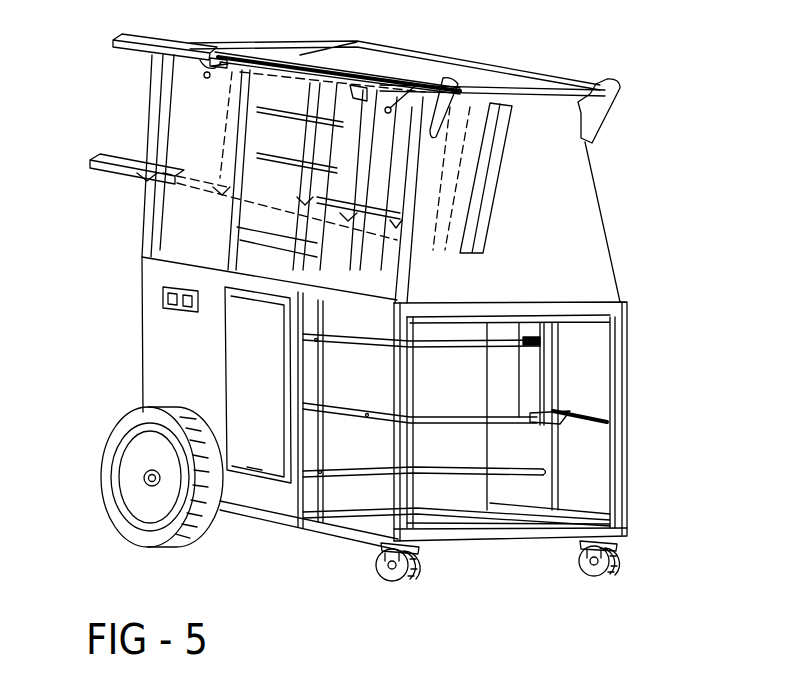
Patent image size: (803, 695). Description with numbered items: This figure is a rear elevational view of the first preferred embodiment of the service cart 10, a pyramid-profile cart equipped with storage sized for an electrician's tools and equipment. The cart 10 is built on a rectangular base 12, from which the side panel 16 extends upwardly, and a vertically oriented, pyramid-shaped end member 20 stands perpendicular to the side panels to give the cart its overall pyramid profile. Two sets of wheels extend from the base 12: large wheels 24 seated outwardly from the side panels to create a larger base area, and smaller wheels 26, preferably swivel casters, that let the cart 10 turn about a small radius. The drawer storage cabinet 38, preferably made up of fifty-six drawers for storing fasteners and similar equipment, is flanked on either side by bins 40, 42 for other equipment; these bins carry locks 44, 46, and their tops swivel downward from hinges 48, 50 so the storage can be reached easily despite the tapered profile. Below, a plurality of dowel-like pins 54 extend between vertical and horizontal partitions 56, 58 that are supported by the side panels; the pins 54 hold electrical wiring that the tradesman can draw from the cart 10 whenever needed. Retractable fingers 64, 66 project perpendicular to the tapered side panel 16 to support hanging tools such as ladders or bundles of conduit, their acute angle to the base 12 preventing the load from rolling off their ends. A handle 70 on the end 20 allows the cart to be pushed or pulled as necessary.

The service cart 10 is at (665, 239).
The rectangular base 12 is at (297, 523).
The side panel 16 is at (158, 370).
The end member 20 is at (593, 217).
The wheels 24 is at (190, 540).
The wheels 26 is at (625, 548).
The drawer storage cabinet 38 is at (263, 137).
The bin 40 is at (173, 228).
The bin 42 is at (382, 282).
The lock 44 is at (207, 66).
The lock 46 is at (440, 68).
The hinge 48 is at (147, 250).
The hinge 50 is at (342, 287).
The dowel-like pins 54 is at (540, 340).
The vertical partition 56 is at (553, 490).
The horizontal partition 58 is at (593, 416).
The retractable finger 64 is at (230, 61).
The retractable finger 66 is at (370, 92).
The handle 70 is at (572, 82).